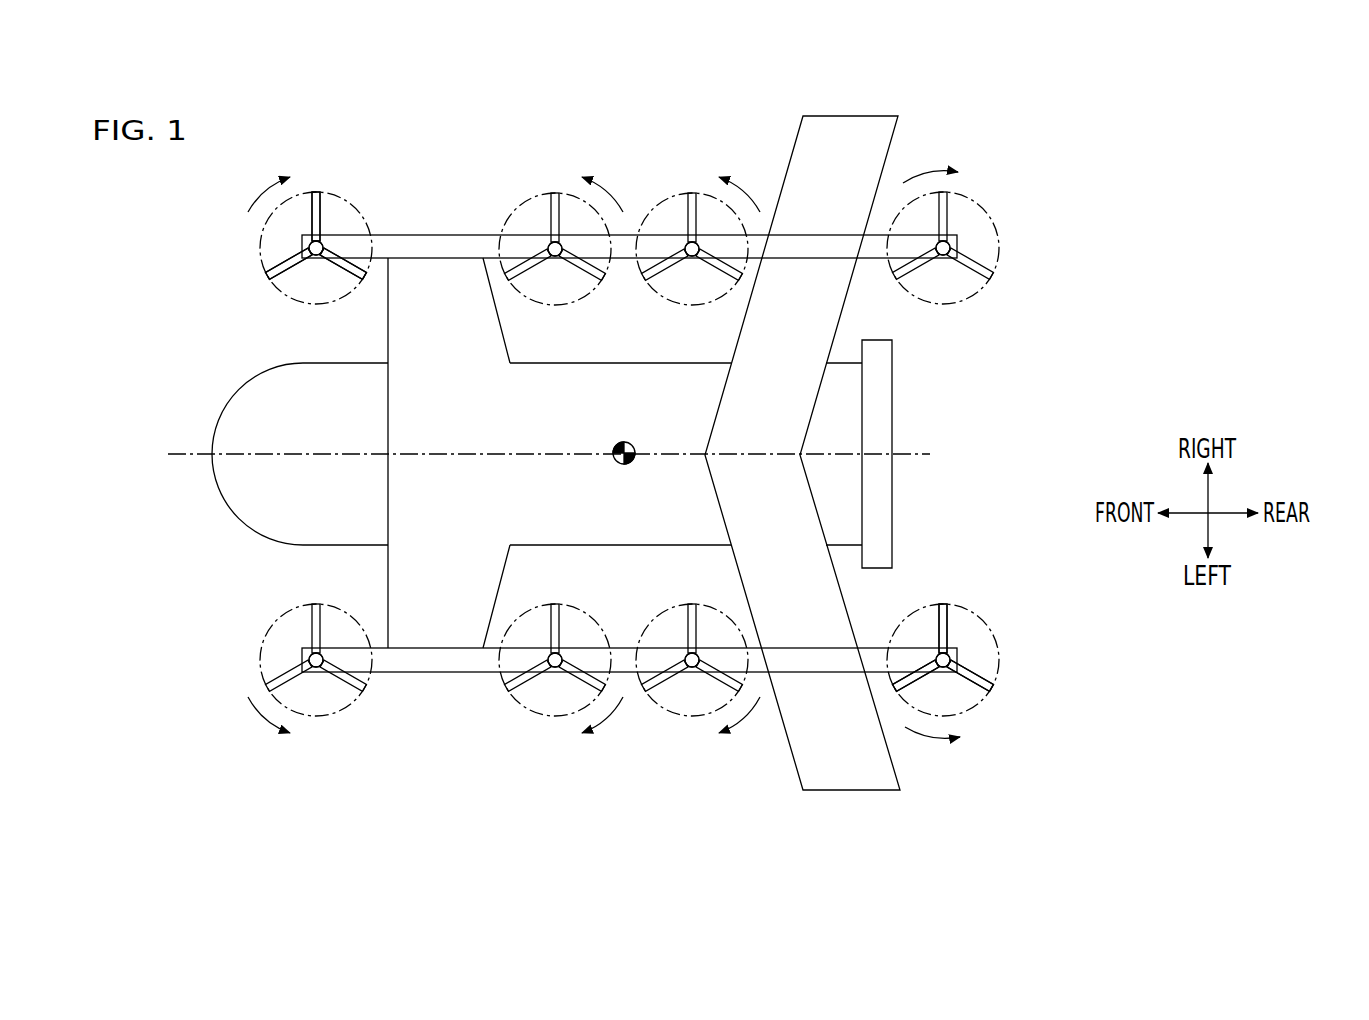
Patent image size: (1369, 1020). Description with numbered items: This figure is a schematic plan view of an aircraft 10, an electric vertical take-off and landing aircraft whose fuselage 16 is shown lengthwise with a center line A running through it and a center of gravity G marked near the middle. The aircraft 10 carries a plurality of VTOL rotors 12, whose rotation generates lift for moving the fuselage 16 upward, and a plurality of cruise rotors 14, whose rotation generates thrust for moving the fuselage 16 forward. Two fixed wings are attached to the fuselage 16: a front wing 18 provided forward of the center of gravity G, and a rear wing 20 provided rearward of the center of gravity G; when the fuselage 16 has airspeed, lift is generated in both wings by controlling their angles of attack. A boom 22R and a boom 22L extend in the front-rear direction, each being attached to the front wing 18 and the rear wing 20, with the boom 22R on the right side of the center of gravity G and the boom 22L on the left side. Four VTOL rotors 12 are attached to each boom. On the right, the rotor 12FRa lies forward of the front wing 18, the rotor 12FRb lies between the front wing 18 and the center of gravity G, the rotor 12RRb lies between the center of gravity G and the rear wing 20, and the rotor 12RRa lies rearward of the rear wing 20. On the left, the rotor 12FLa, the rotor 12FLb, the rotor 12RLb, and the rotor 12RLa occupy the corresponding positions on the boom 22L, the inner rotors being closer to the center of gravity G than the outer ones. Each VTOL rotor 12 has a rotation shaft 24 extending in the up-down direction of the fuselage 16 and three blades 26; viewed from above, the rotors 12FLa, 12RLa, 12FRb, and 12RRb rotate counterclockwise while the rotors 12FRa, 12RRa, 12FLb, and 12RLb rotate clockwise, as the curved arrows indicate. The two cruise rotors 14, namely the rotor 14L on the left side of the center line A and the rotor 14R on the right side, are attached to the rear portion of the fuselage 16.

The aircraft 10 is at (135, 212).
The VTOL rotor 12 is at (689, 455).
The rotor 12FRa is at (313, 192).
The rotor 12FRb is at (553, 193).
The rotor 12RRb is at (690, 193).
The rotor 12RRa is at (952, 196).
The rotor 12FLa is at (343, 683).
The rotor 12FLb is at (512, 690).
The rotor 12RLb is at (658, 680).
The rotor 12RLa is at (982, 682).
The cruise rotor 14 is at (943, 454).
The rotor 14R is at (893, 404).
The rotor 14L is at (893, 506).
The fuselage 16 is at (215, 423).
The front wing 18 is at (424, 283).
The rear wing 20 is at (843, 116).
The boom 22R is at (802, 234).
The boom 22L is at (803, 673).
The rotation shaft 24 is at (315, 258).
The blade 26 is at (278, 274).
The center line A is at (541, 456).
The center of gravity G is at (617, 462).